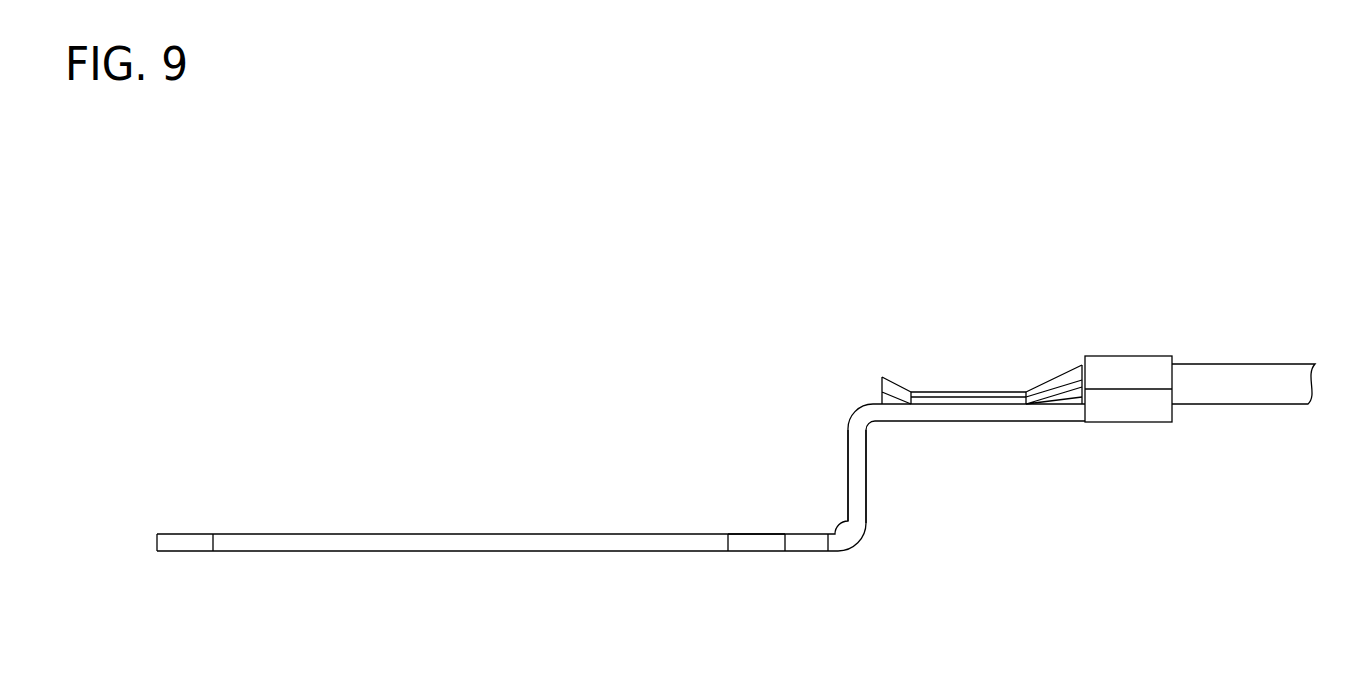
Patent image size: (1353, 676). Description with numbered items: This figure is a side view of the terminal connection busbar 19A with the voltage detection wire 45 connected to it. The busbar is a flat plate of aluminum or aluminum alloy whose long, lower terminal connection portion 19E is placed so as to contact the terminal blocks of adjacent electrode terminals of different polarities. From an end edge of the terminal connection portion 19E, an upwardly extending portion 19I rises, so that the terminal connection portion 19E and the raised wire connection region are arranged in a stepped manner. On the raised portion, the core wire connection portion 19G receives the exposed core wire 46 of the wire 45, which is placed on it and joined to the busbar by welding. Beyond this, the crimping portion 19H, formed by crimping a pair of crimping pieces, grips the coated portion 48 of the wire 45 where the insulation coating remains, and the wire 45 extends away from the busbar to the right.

The terminal connection busbar 19A is at (498, 538).
The terminal connection portion 19E is at (634, 534).
The core wire connection portion 19G is at (966, 405).
The crimping portion 19H is at (1112, 356).
The upwardly extending portion 19I is at (866, 478).
The voltage detection wire 45 is at (1265, 375).
The core wire 46 is at (894, 380).
The coated portion 48 is at (1080, 368).